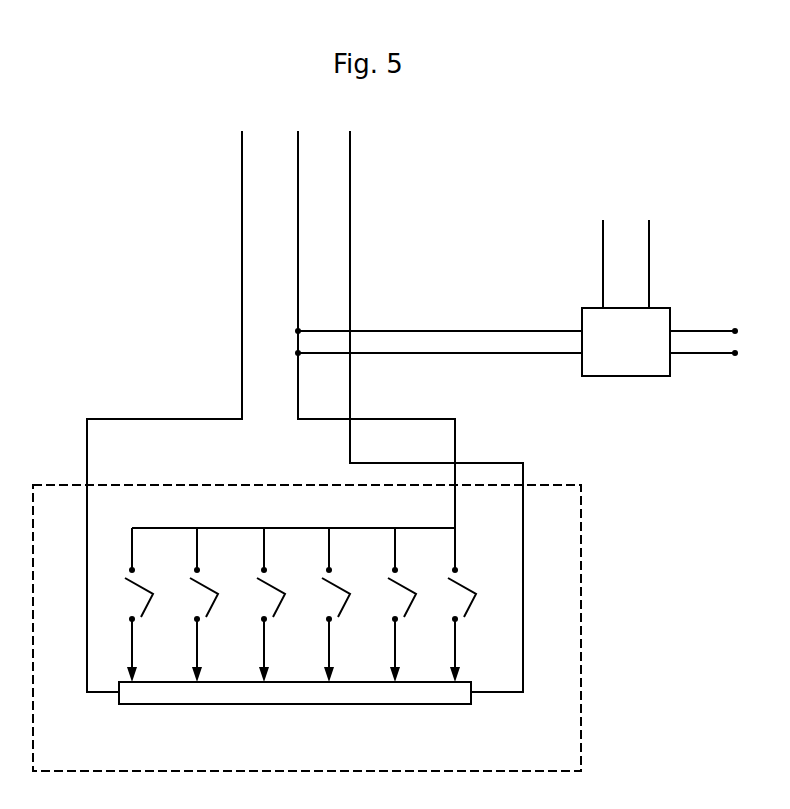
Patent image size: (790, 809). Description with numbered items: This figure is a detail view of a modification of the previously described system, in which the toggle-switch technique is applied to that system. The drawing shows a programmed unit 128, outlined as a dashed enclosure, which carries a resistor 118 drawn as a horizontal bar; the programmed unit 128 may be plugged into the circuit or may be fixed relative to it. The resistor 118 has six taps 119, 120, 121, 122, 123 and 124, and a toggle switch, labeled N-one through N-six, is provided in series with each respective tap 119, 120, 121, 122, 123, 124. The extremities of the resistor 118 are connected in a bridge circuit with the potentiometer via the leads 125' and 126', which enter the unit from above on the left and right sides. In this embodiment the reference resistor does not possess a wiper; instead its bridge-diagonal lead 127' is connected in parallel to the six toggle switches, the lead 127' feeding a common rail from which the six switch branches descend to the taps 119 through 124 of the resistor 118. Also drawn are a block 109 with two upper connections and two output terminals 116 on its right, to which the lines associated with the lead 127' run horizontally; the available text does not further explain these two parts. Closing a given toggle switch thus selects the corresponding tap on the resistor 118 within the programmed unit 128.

The lead 125' is at (164, 411).
The lead 126' is at (436, 411).
The bridge-diagonal lead 127' is at (412, 329).
The control unit 109 is at (620, 365).
The output terminals 116 is at (718, 342).
The resistor 118 is at (228, 693).
The tap 119 is at (132, 658).
The tap 120 is at (197, 658).
The tap 121 is at (264, 658).
The tap 122 is at (329, 658).
The tap 123 is at (395, 658).
The tap 124 is at (455, 658).
The programmed unit 128 is at (581, 657).